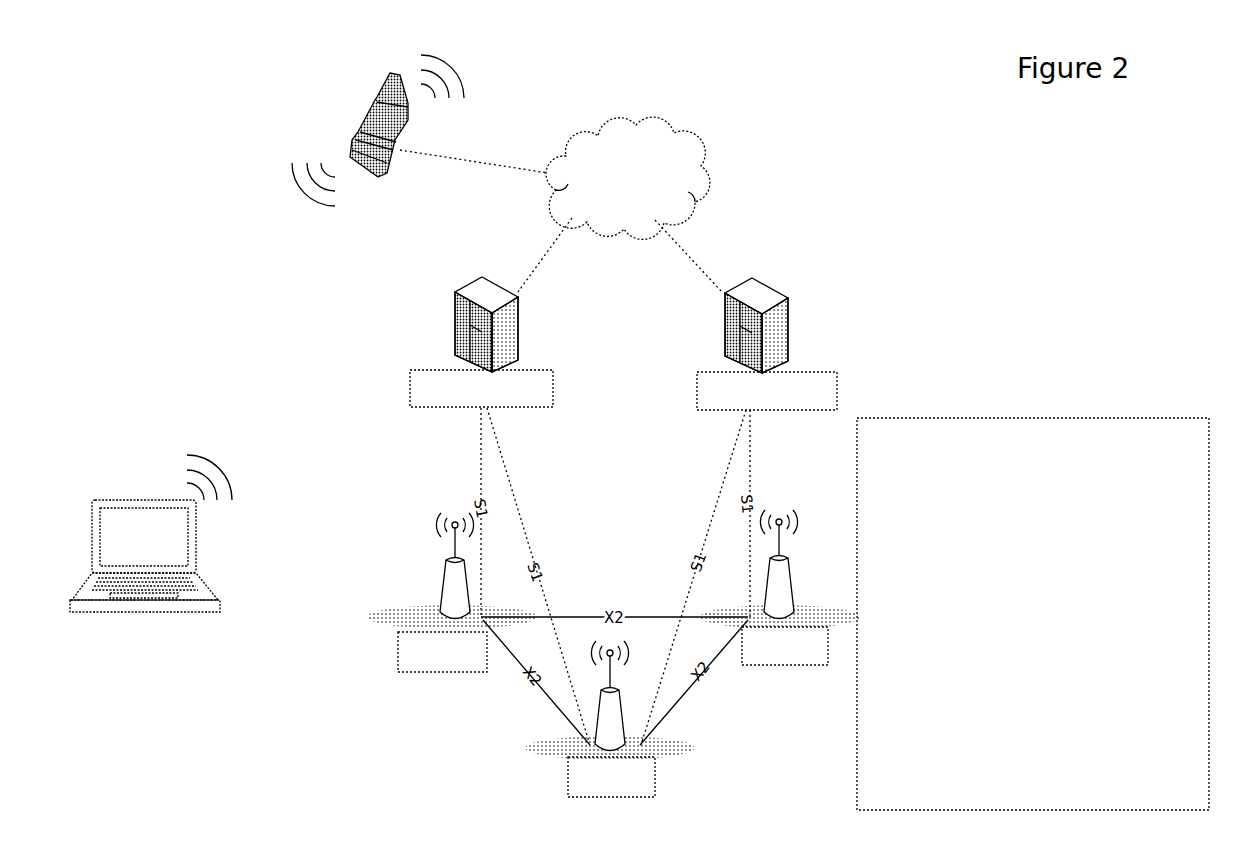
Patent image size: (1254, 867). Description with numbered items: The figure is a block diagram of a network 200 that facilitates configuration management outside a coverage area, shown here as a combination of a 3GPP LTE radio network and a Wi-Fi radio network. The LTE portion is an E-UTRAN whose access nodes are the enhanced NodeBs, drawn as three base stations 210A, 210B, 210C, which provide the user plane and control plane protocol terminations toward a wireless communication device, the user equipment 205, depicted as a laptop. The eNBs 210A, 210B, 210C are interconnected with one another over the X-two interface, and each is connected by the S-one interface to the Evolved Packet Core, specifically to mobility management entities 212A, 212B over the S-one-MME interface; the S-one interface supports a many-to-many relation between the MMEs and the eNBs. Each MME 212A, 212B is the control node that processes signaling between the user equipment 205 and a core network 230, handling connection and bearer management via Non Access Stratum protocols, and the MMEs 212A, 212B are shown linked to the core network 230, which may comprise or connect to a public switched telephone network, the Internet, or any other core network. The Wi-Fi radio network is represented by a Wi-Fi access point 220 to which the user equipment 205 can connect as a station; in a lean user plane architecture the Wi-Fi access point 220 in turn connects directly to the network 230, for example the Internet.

The network 200 is at (1049, 188).
The user equipment 205 is at (151, 557).
The eNB 210A is at (452, 592).
The eNB 210B is at (780, 587).
The eNB 210C is at (610, 719).
The mobility management entity 212A is at (481, 342).
The mobility management entity 212B is at (767, 344).
The Wi-Fi access point 220 is at (378, 130).
The network 230 is at (628, 178).